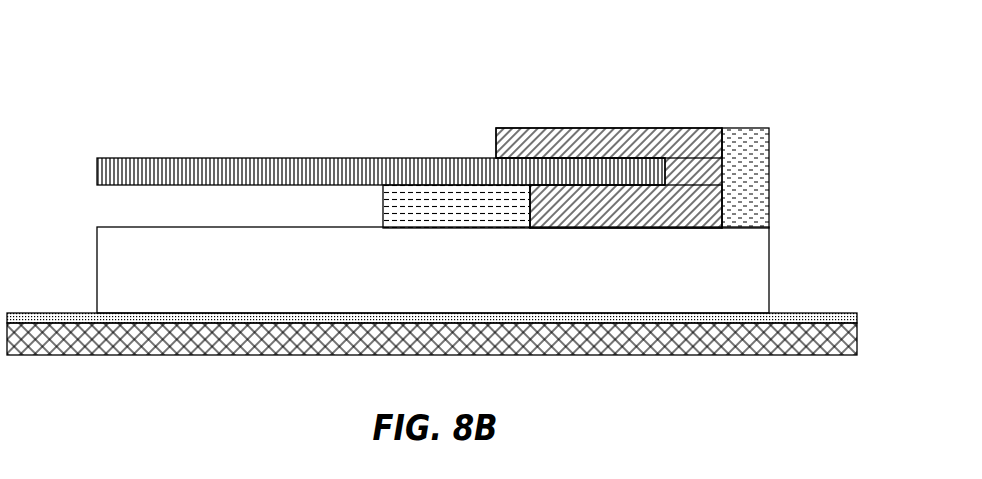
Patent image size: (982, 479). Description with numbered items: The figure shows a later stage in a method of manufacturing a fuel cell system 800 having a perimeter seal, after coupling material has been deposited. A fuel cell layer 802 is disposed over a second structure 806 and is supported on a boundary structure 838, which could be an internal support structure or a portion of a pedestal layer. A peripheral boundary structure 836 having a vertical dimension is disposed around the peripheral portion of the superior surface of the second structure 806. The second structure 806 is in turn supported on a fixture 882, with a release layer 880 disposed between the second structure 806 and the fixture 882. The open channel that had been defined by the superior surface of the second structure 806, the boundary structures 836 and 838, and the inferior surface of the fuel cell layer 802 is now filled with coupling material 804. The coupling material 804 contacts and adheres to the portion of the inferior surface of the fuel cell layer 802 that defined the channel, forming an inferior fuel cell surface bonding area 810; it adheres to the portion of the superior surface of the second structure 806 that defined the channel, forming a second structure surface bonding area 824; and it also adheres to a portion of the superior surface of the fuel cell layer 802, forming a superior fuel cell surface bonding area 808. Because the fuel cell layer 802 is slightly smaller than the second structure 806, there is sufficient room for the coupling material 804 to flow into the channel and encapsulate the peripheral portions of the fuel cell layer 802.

The fuel cell system 800 is at (97, 74).
The fuel cell layer 802 is at (100, 176).
The coupling material 804 is at (684, 134).
The second structure 806 is at (108, 273).
The superior fuel cell surface bonding area 808 is at (573, 157).
The inferior fuel cell surface bonding area 810 is at (600, 186).
The second structure surface bonding area 824 is at (590, 229).
The peripheral boundary structure 836 is at (766, 181).
The boundary structure 838 is at (398, 209).
The release layer 880 is at (800, 312).
The fixture 882 is at (700, 356).